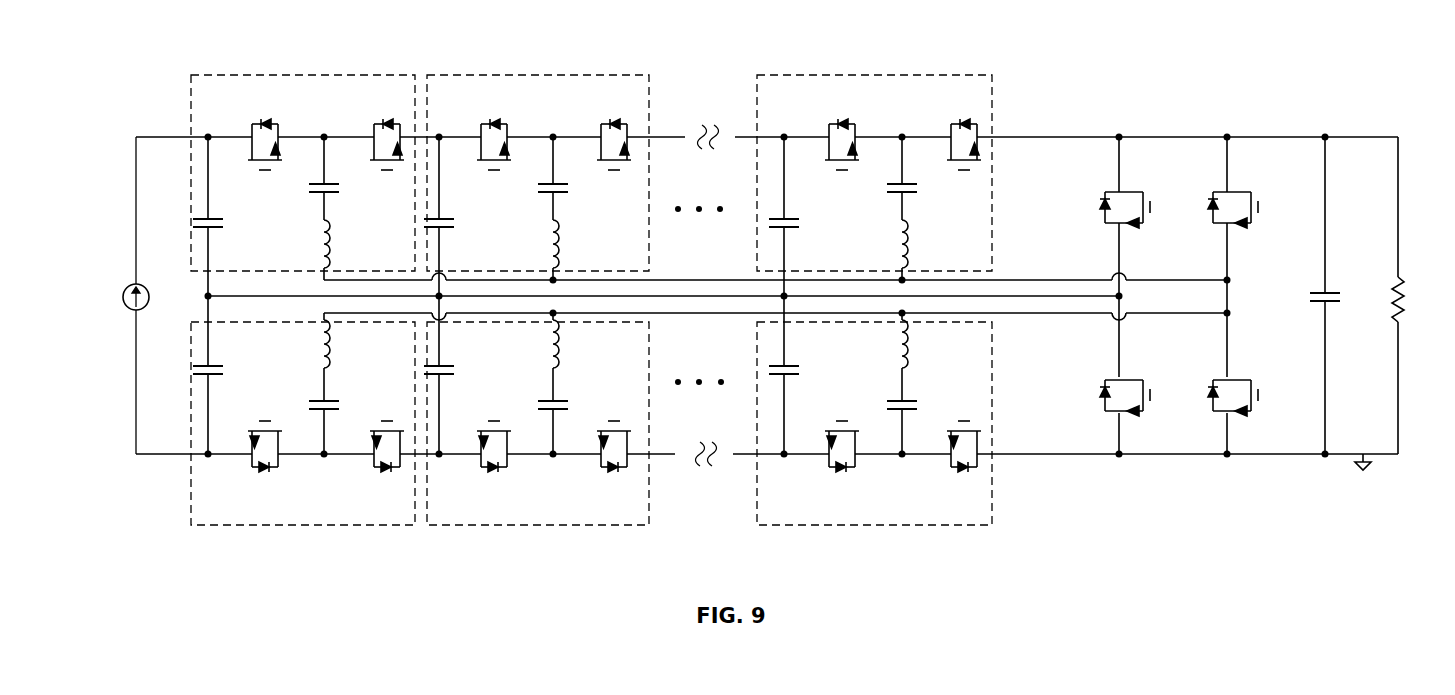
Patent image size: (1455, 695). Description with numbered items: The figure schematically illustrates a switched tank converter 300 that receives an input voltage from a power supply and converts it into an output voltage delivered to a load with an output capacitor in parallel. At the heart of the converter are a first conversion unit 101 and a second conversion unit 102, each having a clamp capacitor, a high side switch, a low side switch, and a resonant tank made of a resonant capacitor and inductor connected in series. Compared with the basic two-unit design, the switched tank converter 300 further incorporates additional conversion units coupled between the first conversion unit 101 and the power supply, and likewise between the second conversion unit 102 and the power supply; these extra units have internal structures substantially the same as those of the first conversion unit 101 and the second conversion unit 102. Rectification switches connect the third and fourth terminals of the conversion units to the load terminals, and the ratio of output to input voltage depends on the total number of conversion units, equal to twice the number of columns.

The first conversion unit 101 is at (822, 72).
The second conversion unit 102 is at (802, 530).
The switched tank converter 300 is at (1356, 78).